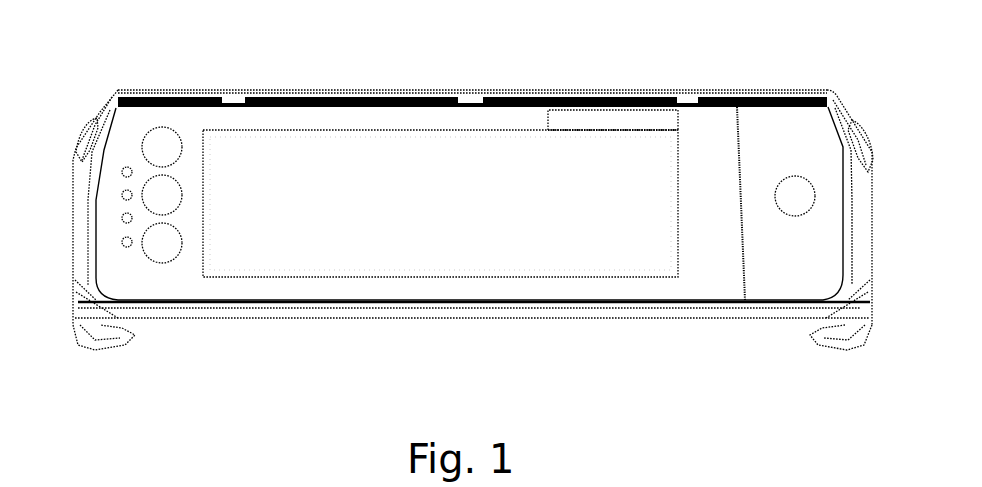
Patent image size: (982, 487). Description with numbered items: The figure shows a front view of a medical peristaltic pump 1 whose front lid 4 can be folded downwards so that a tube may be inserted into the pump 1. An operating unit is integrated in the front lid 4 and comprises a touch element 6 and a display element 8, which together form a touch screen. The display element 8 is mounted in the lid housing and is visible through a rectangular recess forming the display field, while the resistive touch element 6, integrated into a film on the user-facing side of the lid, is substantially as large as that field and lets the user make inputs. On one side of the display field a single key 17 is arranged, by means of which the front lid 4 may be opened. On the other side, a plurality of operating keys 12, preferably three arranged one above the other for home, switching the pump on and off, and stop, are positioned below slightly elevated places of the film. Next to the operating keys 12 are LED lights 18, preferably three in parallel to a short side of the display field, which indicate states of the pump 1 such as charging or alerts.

The peristaltic pump 1 is at (465, 185).
The front lid 4 is at (746, 90).
The touch element 6 is at (347, 258).
The display element 8 is at (543, 274).
The operating keys 12 is at (157, 232).
The single key 17 is at (803, 200).
The LED lights 18 is at (123, 242).